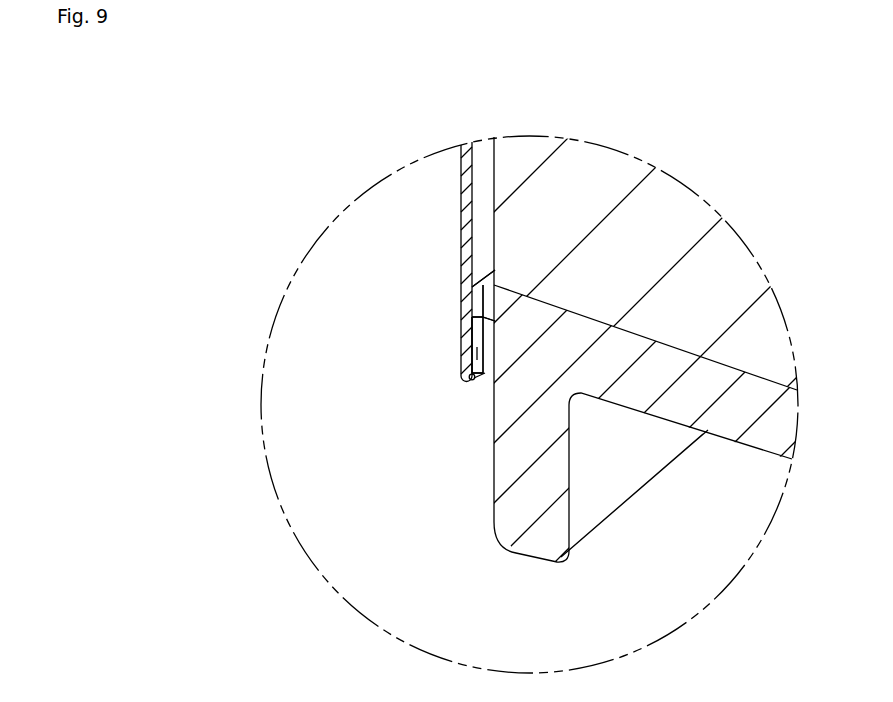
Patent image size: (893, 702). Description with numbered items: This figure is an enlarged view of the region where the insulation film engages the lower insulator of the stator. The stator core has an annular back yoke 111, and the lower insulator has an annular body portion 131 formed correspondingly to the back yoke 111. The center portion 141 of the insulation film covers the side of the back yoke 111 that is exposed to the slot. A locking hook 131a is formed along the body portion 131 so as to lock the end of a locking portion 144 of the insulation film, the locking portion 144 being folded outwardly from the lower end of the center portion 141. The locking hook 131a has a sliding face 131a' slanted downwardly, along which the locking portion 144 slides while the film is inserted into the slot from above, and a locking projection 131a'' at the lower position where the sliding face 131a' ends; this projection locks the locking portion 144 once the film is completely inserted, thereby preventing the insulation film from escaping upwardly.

The back yoke 111 is at (622, 251).
The body portion 131 is at (670, 392).
The locking hook 131a is at (283, 274).
The sliding face 131a' is at (336, 244).
The locking projection 131a'' is at (330, 336).
The center portion 141 is at (461, 195).
The locking portion 144 is at (472, 352).